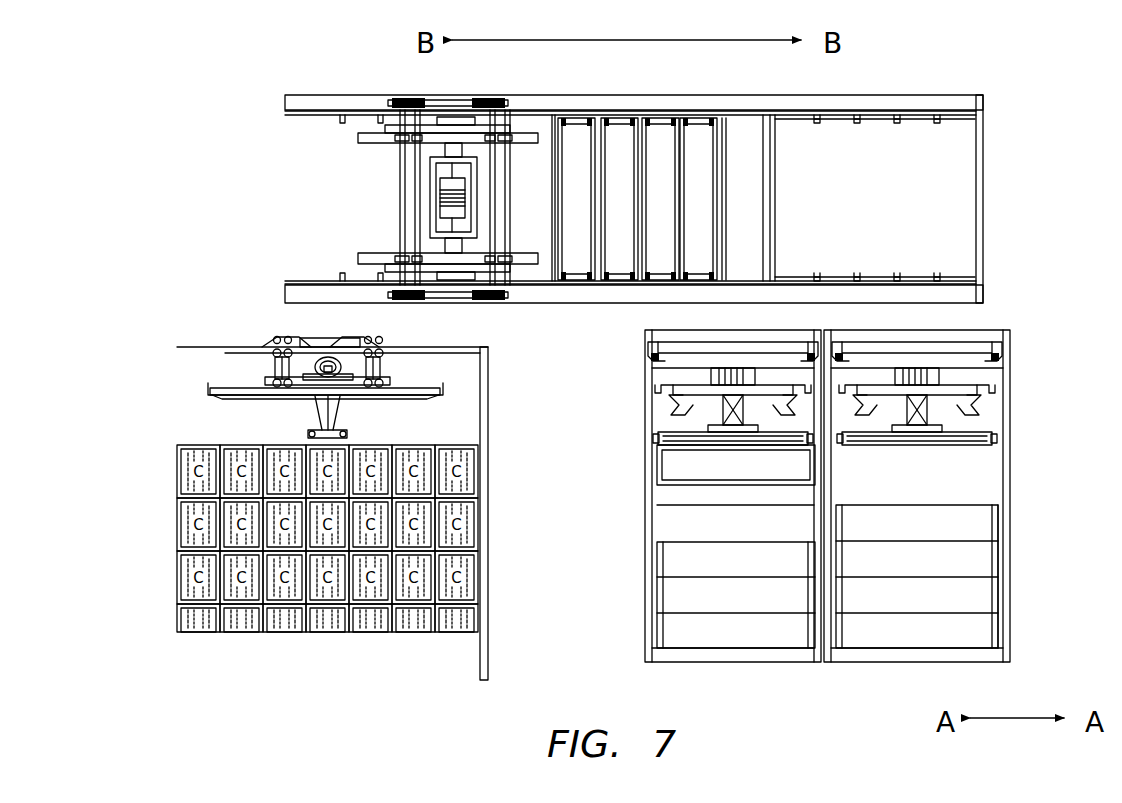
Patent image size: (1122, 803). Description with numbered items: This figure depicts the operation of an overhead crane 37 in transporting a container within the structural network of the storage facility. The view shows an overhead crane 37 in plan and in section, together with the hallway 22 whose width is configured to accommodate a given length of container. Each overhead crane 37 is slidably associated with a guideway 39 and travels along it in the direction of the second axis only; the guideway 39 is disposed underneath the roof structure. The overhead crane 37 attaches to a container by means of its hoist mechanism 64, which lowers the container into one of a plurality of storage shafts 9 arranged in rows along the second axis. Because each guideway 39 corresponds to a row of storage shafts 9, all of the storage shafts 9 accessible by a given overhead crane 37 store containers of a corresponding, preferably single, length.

The storage shaft 9 is at (1000, 615).
The hallway 22 is at (1010, 187).
The overhead crane 37 is at (368, 185).
The guideway 39 is at (937, 101).
The hoist mechanism 64 is at (352, 432).